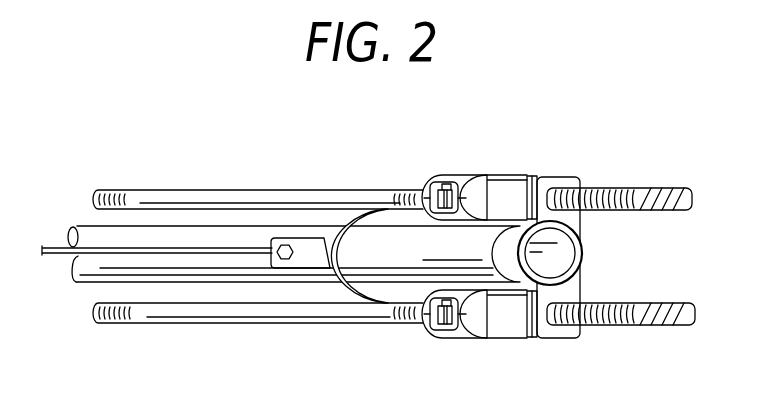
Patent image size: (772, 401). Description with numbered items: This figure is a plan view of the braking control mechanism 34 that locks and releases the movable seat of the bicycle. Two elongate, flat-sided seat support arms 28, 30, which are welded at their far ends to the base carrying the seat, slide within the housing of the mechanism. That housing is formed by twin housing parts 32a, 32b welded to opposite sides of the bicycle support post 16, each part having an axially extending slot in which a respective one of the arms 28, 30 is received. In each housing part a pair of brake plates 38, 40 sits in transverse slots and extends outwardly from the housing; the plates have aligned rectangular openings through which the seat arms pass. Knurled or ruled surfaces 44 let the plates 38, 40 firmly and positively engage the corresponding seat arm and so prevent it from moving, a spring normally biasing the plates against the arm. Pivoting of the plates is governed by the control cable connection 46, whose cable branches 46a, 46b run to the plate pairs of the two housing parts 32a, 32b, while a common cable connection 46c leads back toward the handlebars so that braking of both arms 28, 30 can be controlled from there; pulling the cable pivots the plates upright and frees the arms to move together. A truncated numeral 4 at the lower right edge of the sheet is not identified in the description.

The bicycle support post 16 is at (218, 238).
The seat support arm 28 is at (623, 334).
The seat support arm 30 is at (622, 182).
The housing part 32a is at (554, 338).
The housing part 32b is at (562, 176).
The braking control mechanism 34 is at (484, 345).
The brake plate 38 is at (442, 180).
The brake plate 40 is at (450, 176).
The knurled surface 44 is at (607, 212).
The control cable connection 46 is at (60, 259).
The cable branch 46a is at (346, 292).
The cable branch 46b is at (341, 228).
The common cable connection 46c is at (136, 247).
The partial numeral of adjacent figure 4 is at (738, 400).